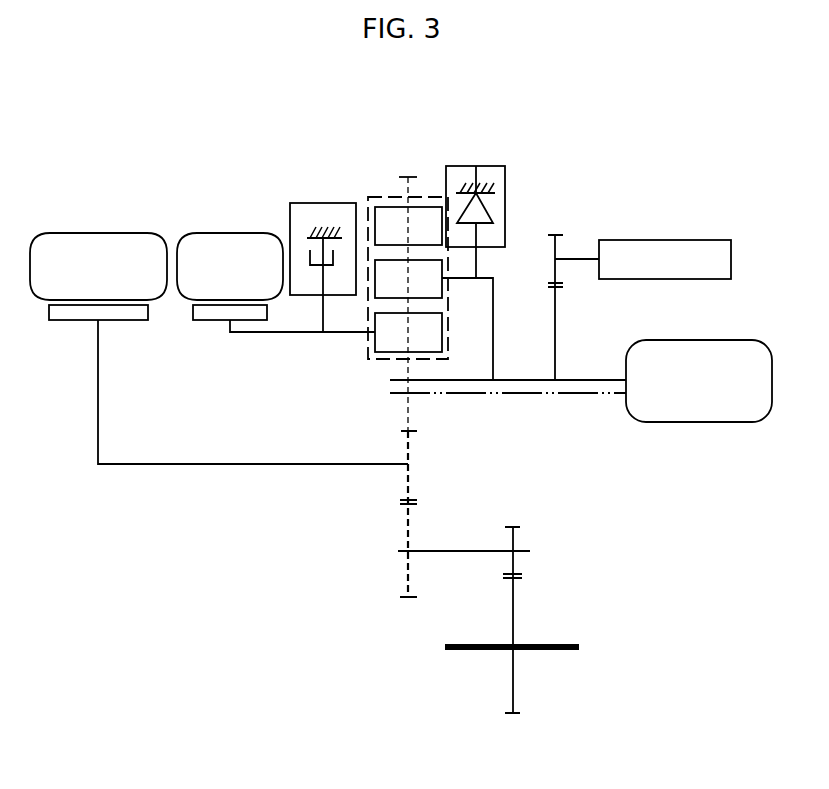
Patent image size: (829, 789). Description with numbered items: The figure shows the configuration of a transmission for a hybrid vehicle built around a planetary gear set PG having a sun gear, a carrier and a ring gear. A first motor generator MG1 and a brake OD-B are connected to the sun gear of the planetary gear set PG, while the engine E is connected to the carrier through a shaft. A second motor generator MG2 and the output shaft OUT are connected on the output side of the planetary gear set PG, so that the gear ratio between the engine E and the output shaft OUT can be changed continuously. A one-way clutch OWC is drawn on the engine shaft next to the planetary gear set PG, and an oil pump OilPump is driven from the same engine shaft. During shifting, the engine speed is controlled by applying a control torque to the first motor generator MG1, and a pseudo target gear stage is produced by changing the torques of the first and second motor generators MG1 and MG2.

The second motor generator MG2 is at (219, 348).
The first motor generator MG1 is at (276, 282).
The brake OD-B is at (323, 227).
The planetary gear set PG is at (383, 197).
The one-way clutch OWC is at (476, 166).
The oil pump OilPump is at (639, 307).
The engine E is at (699, 381).
The output shaft OUT is at (443, 549).